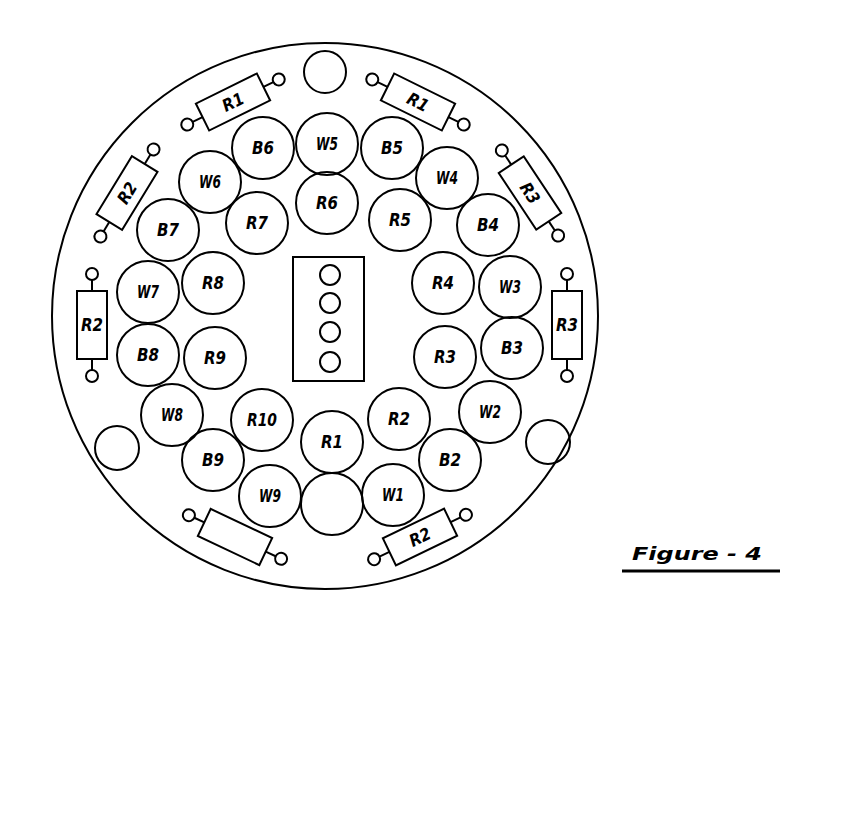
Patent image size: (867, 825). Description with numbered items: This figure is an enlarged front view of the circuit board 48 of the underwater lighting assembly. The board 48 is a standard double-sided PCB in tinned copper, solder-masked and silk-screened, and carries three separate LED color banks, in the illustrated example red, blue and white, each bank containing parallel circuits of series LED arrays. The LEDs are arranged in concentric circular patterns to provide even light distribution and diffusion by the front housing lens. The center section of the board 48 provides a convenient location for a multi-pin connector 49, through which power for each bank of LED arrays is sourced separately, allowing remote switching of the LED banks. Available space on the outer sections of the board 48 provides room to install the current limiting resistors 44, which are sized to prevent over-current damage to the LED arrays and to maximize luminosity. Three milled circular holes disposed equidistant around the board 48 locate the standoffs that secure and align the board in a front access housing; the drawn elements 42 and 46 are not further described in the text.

The mounting hole 42 is at (125, 483).
The resistor 44 is at (227, 555).
The light emitting diode 46 is at (329, 538).
The circuit board 48 is at (442, 578).
The connector 49 is at (365, 335).